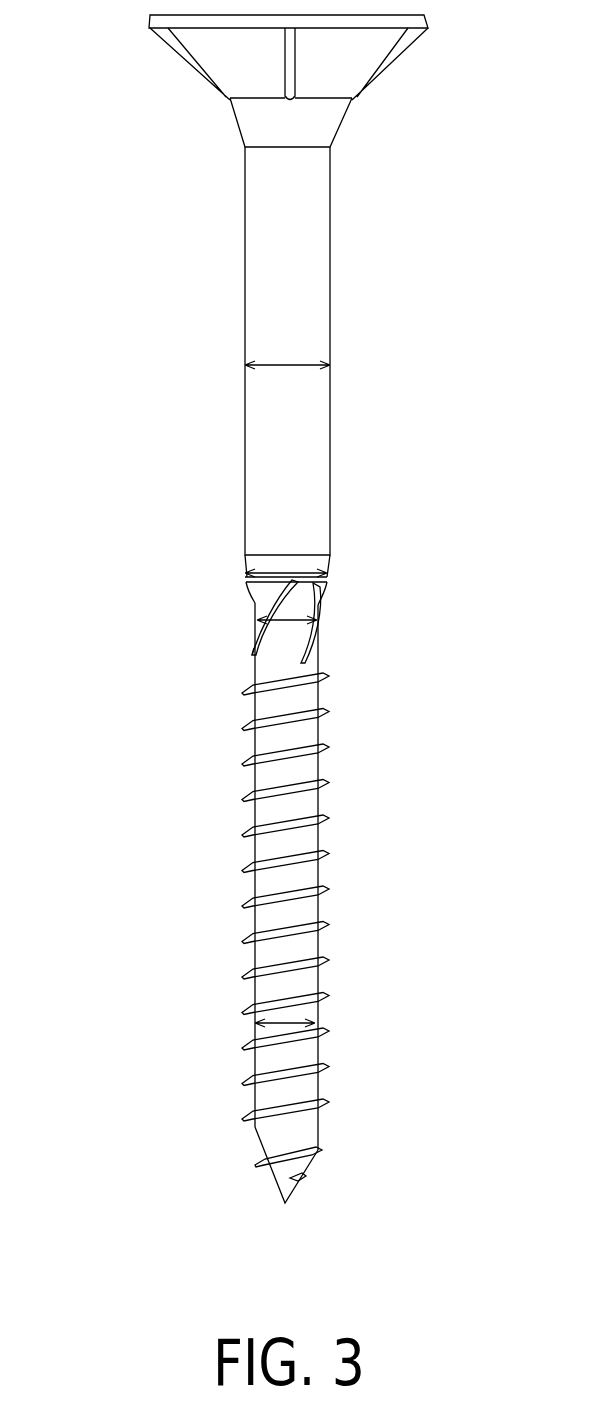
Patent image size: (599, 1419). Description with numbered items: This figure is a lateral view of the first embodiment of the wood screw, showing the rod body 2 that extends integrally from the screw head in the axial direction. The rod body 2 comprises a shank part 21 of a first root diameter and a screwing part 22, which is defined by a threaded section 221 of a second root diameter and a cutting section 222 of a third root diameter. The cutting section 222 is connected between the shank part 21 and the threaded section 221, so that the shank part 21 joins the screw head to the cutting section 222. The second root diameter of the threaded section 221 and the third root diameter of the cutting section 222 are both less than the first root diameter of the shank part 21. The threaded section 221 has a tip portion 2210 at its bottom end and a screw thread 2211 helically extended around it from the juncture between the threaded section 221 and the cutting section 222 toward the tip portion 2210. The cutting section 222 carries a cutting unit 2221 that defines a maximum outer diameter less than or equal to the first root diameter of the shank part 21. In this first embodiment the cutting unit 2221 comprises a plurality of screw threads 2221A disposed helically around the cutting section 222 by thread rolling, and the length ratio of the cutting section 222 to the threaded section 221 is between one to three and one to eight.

The rod body 2 is at (297, 619).
The shank part 21 is at (360, 555).
The screwing part 22 is at (347, 880).
The threaded section 221 is at (303, 913).
The cutting section 222 is at (277, 644).
The cutting unit 2221 is at (250, 590).
The screw threads 2221A is at (252, 655).
The screw thread 2211 is at (250, 942).
The tip portion 2210 is at (236, 1175).